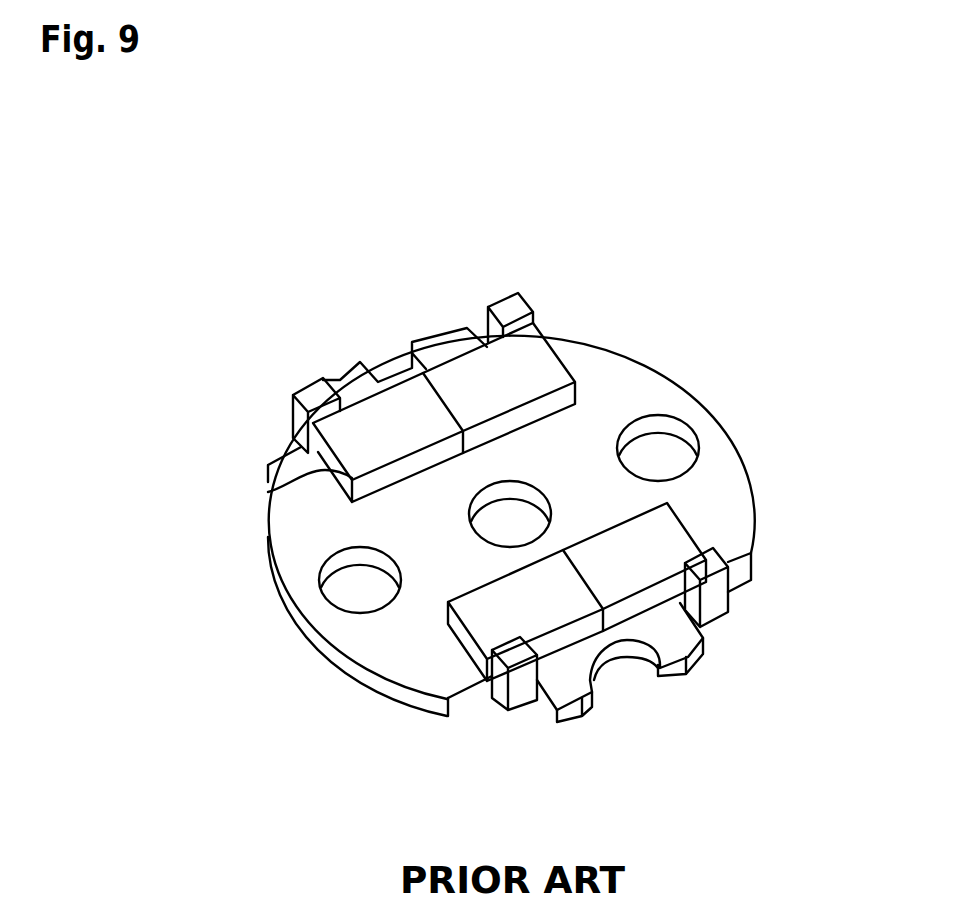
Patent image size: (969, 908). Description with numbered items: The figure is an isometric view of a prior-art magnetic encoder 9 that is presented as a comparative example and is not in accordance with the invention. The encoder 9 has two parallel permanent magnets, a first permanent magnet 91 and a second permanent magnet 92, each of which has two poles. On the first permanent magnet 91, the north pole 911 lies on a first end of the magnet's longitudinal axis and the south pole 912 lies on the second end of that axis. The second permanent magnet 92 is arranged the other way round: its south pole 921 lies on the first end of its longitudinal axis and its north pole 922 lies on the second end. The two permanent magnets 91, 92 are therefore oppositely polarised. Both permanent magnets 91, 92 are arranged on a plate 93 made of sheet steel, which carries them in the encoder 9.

The magnetic encoder 9 is at (802, 243).
The first permanent magnet 91 is at (268, 492).
The north pole 911 is at (367, 413).
The south pole 912 is at (543, 361).
The second permanent magnet 92 is at (667, 503).
The south pole 921 is at (472, 613).
The north pole 922 is at (682, 540).
The plate 93 is at (375, 673).